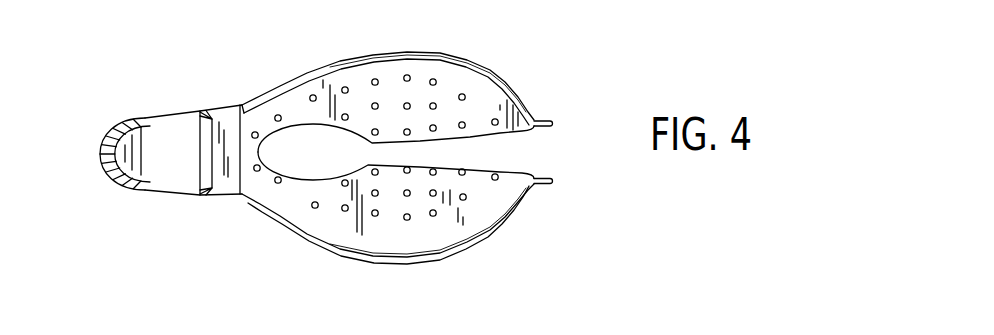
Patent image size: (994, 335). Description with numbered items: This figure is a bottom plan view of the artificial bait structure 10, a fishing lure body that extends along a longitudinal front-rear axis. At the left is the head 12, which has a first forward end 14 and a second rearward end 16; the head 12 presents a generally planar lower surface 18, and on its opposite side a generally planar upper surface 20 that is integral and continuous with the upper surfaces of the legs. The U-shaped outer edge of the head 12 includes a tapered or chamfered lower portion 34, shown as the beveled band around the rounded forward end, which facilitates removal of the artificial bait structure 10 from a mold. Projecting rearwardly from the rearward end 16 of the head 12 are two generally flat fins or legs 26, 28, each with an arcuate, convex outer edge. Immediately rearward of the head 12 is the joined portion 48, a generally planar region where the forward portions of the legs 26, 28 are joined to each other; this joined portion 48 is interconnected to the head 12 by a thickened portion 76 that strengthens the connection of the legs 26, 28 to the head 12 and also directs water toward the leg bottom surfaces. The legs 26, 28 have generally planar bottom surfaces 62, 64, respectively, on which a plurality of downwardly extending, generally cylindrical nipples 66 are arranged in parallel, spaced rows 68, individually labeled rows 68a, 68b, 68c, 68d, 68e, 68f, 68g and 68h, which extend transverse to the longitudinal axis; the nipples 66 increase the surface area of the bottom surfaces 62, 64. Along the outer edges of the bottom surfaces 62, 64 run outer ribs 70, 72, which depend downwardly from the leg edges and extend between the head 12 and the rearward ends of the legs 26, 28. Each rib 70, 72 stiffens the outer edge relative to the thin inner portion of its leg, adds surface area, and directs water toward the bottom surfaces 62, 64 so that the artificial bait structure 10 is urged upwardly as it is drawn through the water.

The artificial bait structure 10 is at (366, 274).
The head 12 is at (159, 203).
The first forward end 14 is at (95, 158).
The second rearward end 16 is at (217, 177).
The lower surface 18 is at (152, 168).
The upper surface 20 is at (143, 331).
The first leg 26 is at (487, 203).
The second leg 28 is at (468, 82).
The chamfered lower portion 34 is at (145, 117).
The joined portion 48 is at (247, 138).
The bottom surface 62 is at (435, 237).
The bottom surface 64 is at (478, 128).
The nipples 66 is at (377, 216).
The rows 68 is at (437, 108).
The row 68a is at (258, 171).
The row 68b is at (278, 114).
The row 68c is at (313, 94).
The row 68d is at (408, 74).
The row 68e is at (408, 221).
The row 68f is at (436, 77).
The row 68g is at (465, 200).
The row 68h is at (494, 118).
The outer rib 70 is at (318, 237).
The outer rib 72 is at (358, 60).
The thickened portion 76 is at (212, 113).